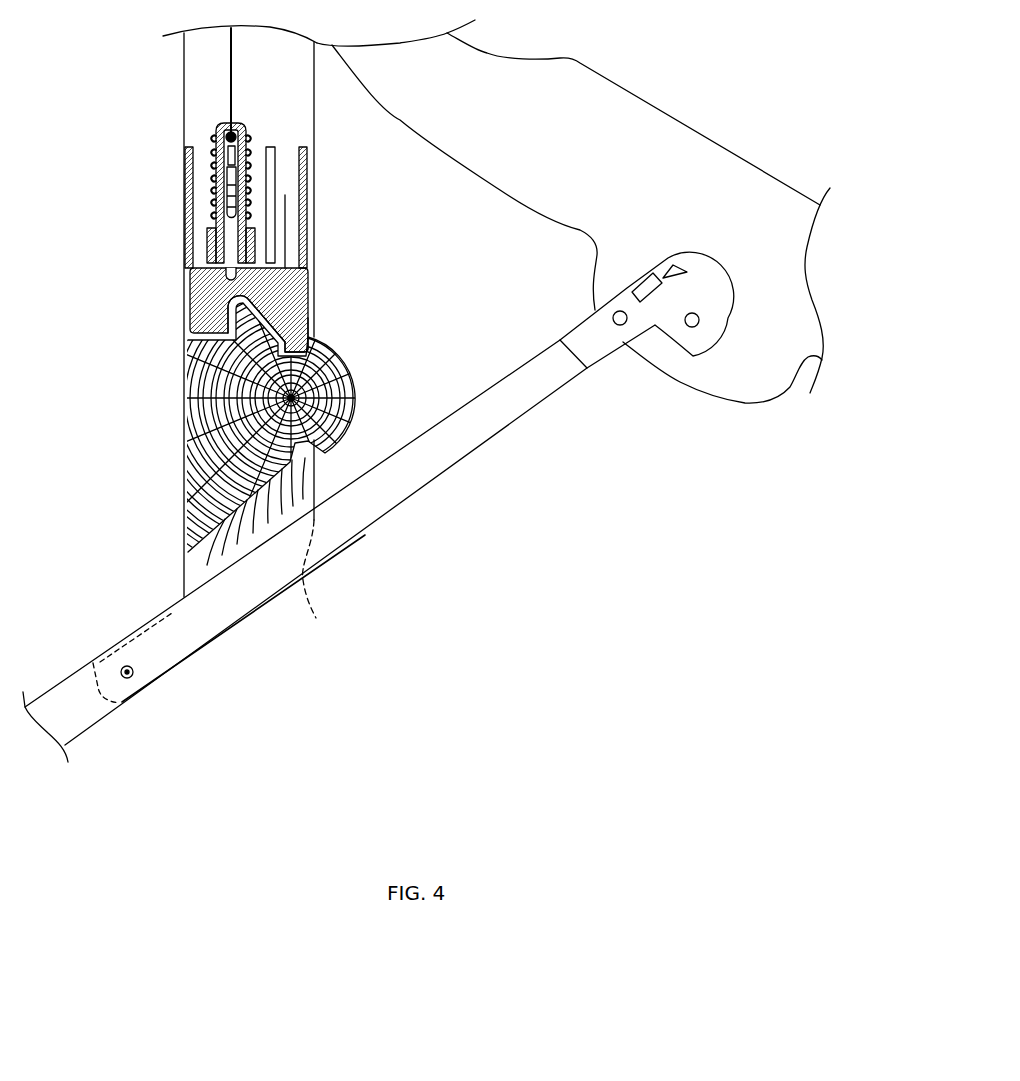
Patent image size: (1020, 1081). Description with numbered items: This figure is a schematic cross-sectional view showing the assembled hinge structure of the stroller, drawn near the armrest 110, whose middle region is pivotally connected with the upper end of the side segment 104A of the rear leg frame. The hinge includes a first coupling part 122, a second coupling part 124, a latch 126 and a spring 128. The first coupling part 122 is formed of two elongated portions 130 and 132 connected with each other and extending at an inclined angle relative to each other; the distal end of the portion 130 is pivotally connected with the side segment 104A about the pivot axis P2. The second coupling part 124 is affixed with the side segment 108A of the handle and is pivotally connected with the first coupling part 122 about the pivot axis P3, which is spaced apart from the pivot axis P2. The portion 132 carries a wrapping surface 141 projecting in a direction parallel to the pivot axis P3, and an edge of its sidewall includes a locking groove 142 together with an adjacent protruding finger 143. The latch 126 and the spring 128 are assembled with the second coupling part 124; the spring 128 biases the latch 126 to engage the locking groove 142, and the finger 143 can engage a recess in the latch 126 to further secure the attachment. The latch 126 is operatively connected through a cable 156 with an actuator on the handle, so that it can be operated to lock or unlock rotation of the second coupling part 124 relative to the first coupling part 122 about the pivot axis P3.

The side segment 108A is at (197, 53).
The cable 156 is at (228, 78).
The spring 128 is at (213, 193).
The second coupling part 124 is at (307, 200).
The latch 126 is at (205, 300).
The locking groove 142 is at (288, 337).
The protruding finger 143 is at (243, 318).
The pivot axis P3 is at (299, 391).
The elongated portion 132 is at (183, 428).
The first coupling part 122 is at (172, 517).
The wrapping surface 141 is at (237, 521).
The elongated portion 130 is at (323, 581).
The side segment 104A is at (482, 440).
The pivot axis P2 is at (131, 678).
The armrest 110 is at (687, 145).